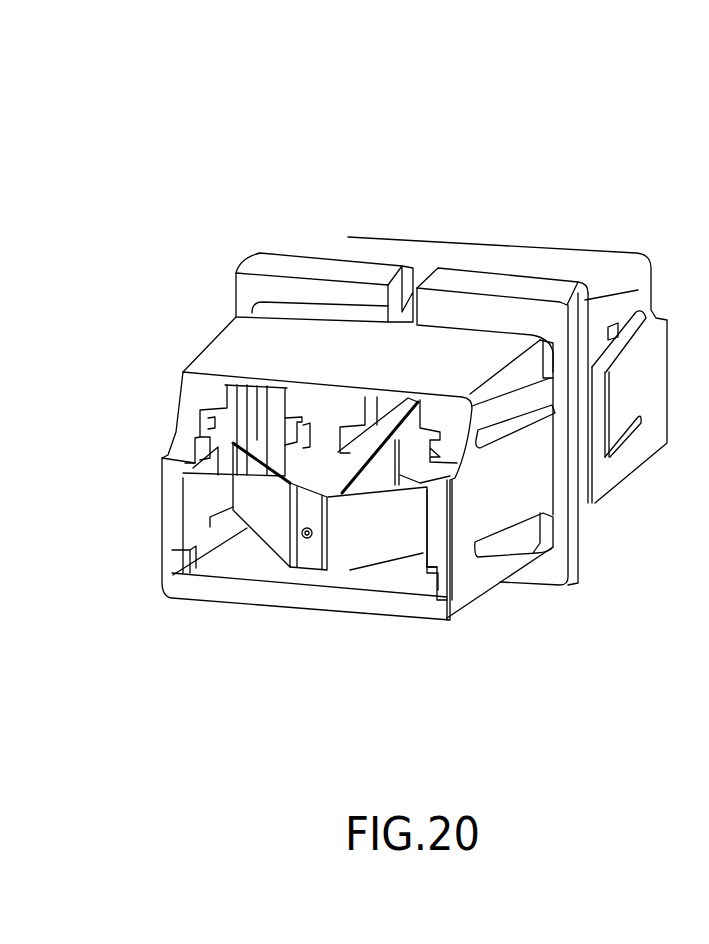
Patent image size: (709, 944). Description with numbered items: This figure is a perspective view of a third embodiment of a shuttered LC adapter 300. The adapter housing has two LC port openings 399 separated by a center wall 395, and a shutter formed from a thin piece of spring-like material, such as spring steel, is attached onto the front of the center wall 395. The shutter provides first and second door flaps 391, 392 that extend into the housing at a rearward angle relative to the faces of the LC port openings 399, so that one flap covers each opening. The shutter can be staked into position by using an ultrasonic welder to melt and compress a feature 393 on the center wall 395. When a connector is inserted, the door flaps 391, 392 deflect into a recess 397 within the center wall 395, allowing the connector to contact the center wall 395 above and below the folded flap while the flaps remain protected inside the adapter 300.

The shuttered LC adapter 300 is at (490, 157).
The first door flap 391 is at (265, 510).
The second door flap 392 is at (366, 528).
The feature 393 is at (305, 527).
The center wall 395 is at (295, 489).
The recess 397 is at (397, 474).
The LC port openings 399 is at (228, 582).